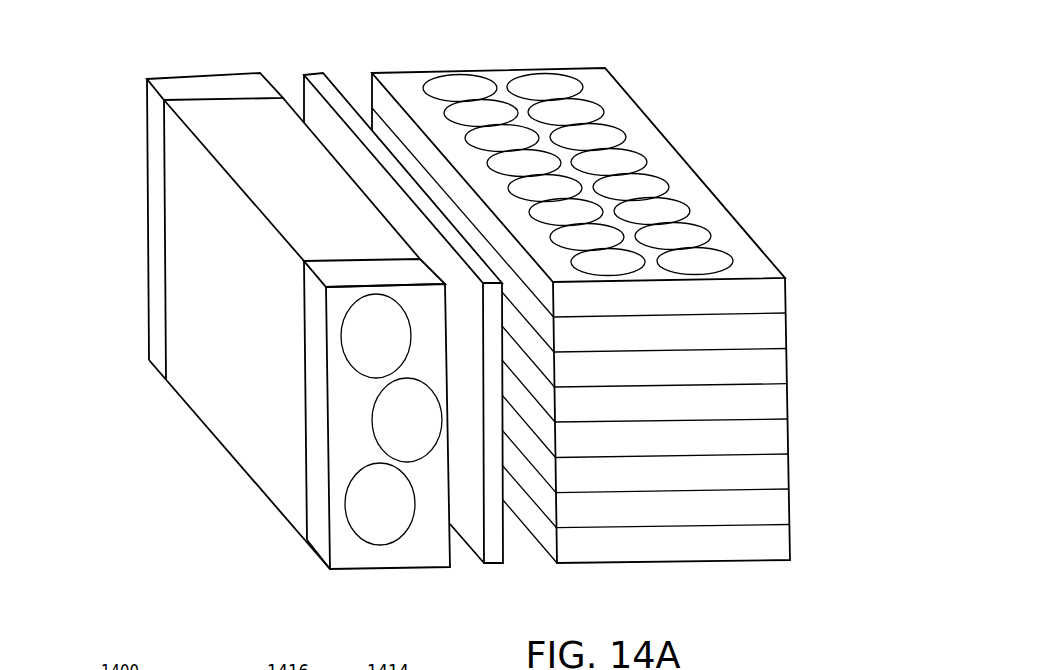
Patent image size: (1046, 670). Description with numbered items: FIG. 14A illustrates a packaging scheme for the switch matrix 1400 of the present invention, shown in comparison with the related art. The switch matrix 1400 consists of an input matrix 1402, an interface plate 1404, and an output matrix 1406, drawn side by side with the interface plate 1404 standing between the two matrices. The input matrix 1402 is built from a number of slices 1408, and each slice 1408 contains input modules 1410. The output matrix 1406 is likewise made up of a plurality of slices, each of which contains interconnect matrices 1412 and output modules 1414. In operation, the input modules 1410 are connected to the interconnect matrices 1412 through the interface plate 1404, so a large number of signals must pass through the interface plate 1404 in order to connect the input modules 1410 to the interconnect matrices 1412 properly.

The switch matrix 1400 is at (101, 108).
The input matrix 1402 is at (205, 373).
The interface plate 1404 is at (313, 62).
The output matrix 1406 is at (497, 57).
The slice 1408 is at (323, 488).
The input module 1410 is at (383, 537).
The interconnect matrix 1412 is at (429, 88).
The output module 1414 is at (575, 79).